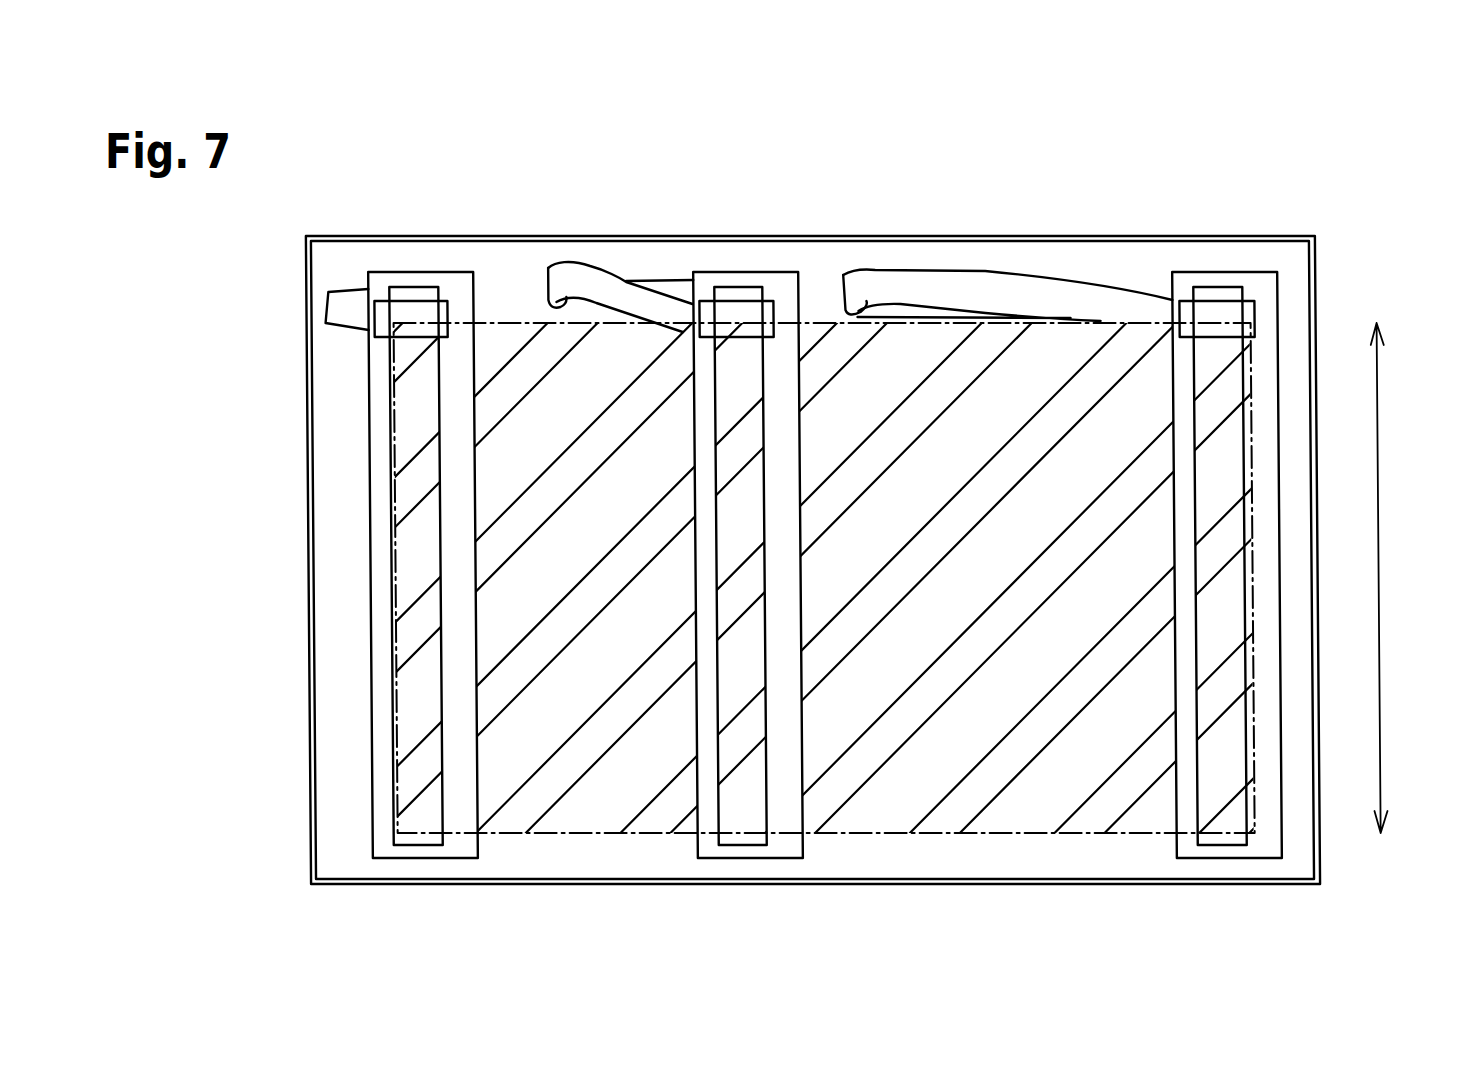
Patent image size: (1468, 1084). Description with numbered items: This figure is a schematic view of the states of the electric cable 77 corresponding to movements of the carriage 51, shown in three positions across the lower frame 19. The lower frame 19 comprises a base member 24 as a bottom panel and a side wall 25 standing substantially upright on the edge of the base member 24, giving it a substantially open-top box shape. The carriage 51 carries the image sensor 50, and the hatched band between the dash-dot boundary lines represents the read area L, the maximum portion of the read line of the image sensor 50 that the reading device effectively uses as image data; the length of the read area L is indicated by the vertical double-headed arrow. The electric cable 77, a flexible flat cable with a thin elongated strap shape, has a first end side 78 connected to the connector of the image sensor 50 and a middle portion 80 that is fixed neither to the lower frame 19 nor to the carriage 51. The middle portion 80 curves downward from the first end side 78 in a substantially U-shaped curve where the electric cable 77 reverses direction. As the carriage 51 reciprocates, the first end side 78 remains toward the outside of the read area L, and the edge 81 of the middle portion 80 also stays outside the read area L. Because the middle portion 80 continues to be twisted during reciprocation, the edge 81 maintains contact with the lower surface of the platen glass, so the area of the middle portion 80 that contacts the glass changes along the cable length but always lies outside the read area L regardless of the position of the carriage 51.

The lower frame 19 is at (272, 890).
The base member 24 is at (956, 873).
The side wall 25 is at (308, 580).
The image sensor 50 is at (1180, 539).
The carriage 51 is at (1278, 607).
The electric cable 77 is at (1163, 258).
The first end side 78 is at (1170, 325).
The middle portion 80 is at (858, 283).
The edge 81 is at (848, 314).